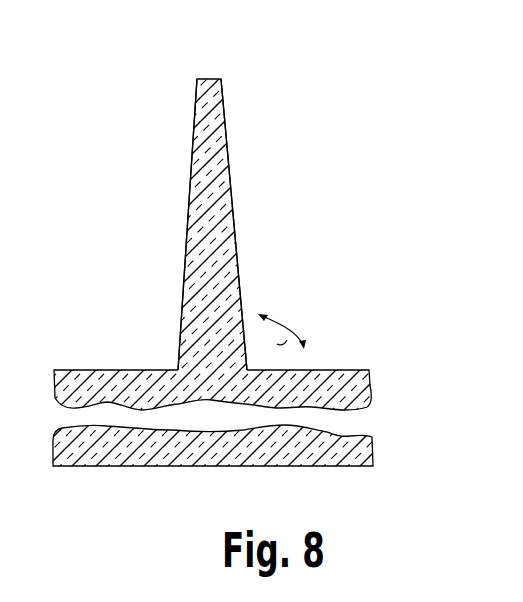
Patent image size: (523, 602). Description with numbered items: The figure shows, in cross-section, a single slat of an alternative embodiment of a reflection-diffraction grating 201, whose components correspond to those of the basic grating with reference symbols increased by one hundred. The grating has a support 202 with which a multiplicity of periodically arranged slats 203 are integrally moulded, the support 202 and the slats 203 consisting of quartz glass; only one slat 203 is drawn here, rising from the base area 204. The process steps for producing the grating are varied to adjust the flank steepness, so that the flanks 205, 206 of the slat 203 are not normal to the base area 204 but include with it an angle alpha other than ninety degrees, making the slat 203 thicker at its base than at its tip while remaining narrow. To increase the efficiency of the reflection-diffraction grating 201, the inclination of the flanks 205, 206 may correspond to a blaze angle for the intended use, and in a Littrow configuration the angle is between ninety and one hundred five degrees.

The reflection-diffraction grating 201 is at (278, 124).
The support 202 is at (167, 452).
The slat 203 is at (235, 172).
The base area 204 is at (338, 370).
The flank 205 is at (193, 141).
The flank 206 is at (235, 233).